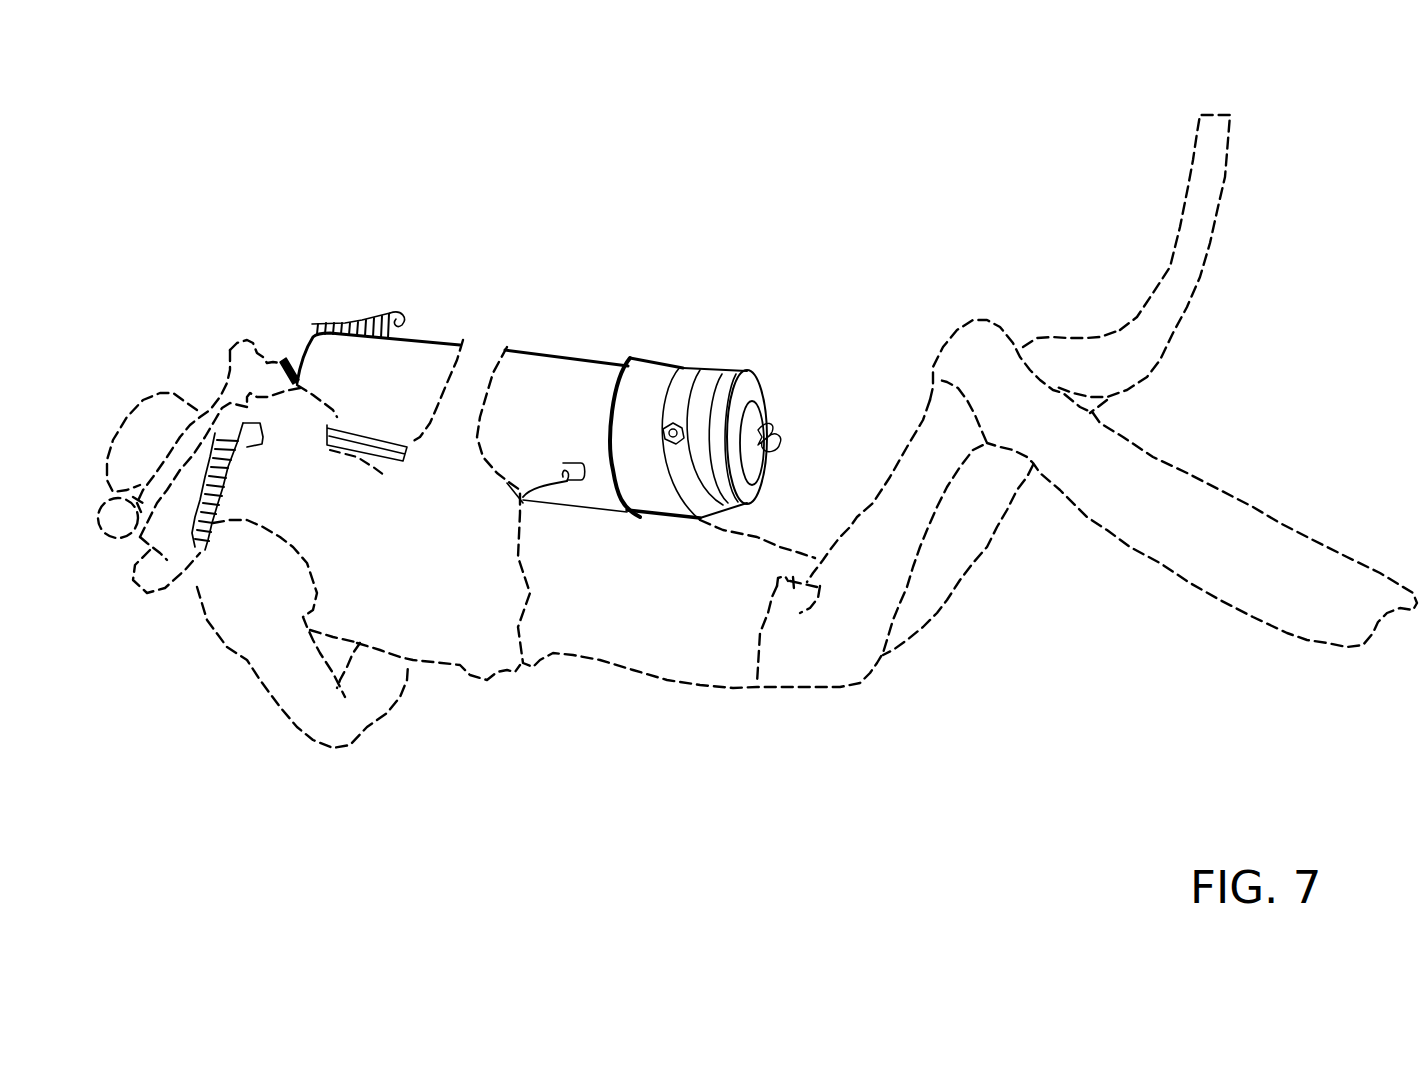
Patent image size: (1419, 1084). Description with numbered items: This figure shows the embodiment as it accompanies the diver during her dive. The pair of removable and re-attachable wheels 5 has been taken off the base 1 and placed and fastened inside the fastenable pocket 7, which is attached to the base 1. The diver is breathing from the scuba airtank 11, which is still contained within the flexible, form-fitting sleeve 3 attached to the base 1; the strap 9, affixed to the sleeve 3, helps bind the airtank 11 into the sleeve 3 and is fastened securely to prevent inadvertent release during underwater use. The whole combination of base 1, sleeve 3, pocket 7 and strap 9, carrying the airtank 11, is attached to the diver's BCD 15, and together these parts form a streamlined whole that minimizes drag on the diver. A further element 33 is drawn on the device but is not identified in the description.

The base 1 is at (668, 370).
The flexible, form-fitting sleeve 3 is at (567, 355).
The pair of removable and re-attachable wheels 5 is at (720, 371).
The fastenable pocket 7 is at (754, 374).
The strap 9 is at (283, 362).
The scuba airtank 11 is at (234, 348).
The BCD 15 is at (435, 665).
The fastening screw 33 is at (676, 446).